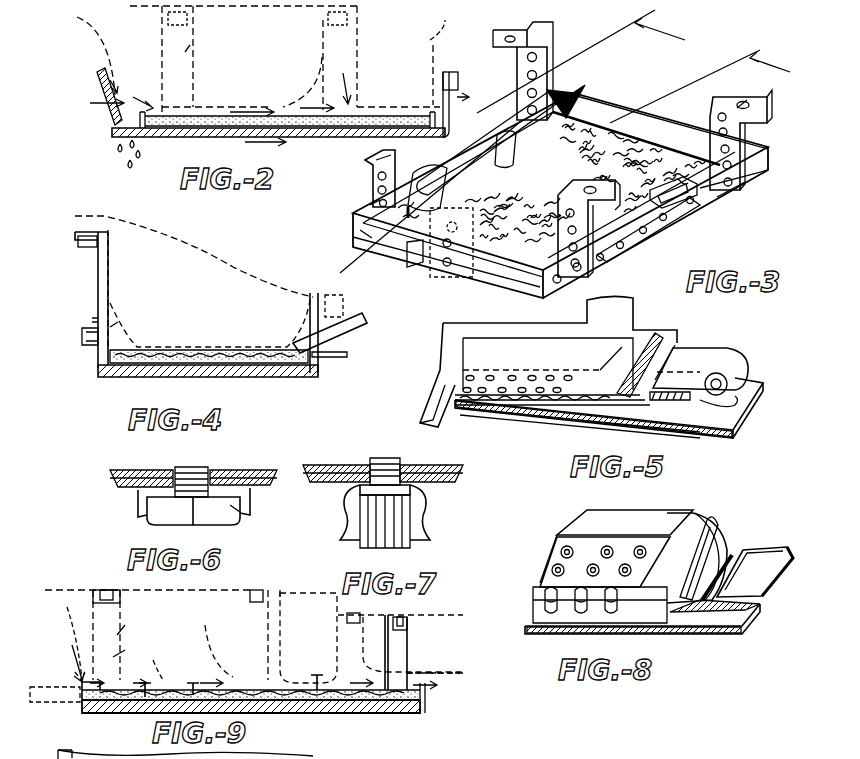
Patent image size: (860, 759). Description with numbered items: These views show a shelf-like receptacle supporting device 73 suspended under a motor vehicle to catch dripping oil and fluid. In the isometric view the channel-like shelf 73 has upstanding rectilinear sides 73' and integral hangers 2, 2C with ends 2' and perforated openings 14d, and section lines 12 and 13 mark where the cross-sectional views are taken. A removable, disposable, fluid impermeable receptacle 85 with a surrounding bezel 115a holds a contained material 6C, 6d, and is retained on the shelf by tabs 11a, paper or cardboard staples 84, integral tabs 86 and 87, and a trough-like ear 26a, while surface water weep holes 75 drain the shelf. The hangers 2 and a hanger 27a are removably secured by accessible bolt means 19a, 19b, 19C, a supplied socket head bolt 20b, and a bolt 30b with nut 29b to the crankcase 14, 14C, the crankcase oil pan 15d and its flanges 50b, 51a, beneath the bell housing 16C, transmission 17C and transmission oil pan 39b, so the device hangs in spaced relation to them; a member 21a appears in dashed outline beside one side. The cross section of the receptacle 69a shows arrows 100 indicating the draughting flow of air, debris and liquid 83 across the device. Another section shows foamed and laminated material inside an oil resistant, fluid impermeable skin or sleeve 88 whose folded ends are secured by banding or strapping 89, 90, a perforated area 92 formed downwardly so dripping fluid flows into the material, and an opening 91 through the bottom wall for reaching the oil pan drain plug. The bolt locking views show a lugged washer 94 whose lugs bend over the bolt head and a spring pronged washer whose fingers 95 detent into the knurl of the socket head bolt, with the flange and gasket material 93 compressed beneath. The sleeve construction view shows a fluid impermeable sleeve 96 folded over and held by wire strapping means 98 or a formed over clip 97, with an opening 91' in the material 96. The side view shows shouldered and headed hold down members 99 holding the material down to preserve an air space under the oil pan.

In FIG. 2, the hanger 2 is at (204, 47).
In FIG. 3, the hanger end 2' is at (750, 91).
In FIG. 3, the vehicle body wall 2C is at (548, 85).
In FIG. 4, the vehicle body wall 2C is at (97, 278).
In FIG. 6, the vehicle body wall 2C is at (76, 555).
In FIG. 7, the vehicle body wall 2C is at (490, 500).
In FIG. 9, the vehicle body wall 2C is at (430, 643).
In FIG. 8, the floor member 6C is at (543, 587).
In FIG. 9, the floor member 6C is at (420, 697).
In FIG. 3, the floor panel 6d is at (660, 146).
In FIG. 5, the floor panel 6d is at (447, 420).
In FIG. 3, the tubular strap roll 11a is at (427, 172).
In FIG. 3, the section line 12 is at (686, 84).
In FIG. 3, the section line 13 is at (689, 40).
In FIG. 9, the crankcase 14 is at (62, 600).
In FIG. 2, the cover housing 14C is at (208, 22).
In FIG. 3, the mounting bracket 14d is at (535, 48).
In FIG. 2, the bucket 15d is at (217, 97).
In FIG. 4, the bucket 15d is at (195, 307).
In FIG. 9, the bucket 15d is at (53, 647).
In FIG. 2, the second bucket 16C is at (382, 63).
In FIG. 9, the second bucket 16C is at (293, 640).
In FIG. 2, the hinge 17C is at (453, 28).
In FIG. 9, the support 19a is at (50, 715).
In FIG. 2, the clip 19b is at (475, 72).
In FIG. 4, the fastening clip 19C is at (82, 246).
In FIG. 6, the fastening clip 19C is at (230, 513).
In FIG. 9, the fastening clip 19C is at (120, 598).
In FIG. 7, the fastener body 20b is at (407, 548).
In FIG. 9, the fastener body 20b is at (262, 615).
In FIG. 4, the latch 21a is at (345, 302).
In FIG. 4, the scraper blade 26a is at (367, 315).
In FIG. 4, the wall flange 27a is at (95, 320).
In FIG. 6, the wall flange 27a is at (135, 527).
In FIG. 7, the wall flange 27a is at (443, 494).
In FIG. 9, the wall flange 27a is at (425, 660).
In FIG. 4, the deflector 29b is at (110, 327).
In FIG. 4, the bolt 30b is at (82, 336).
In FIG. 9, the outlet 39b is at (456, 677).
In FIG. 9, the ground surface 50b is at (68, 745).
In FIG. 6, the panel 51a is at (133, 483).
In FIG. 7, the panel 51a is at (330, 467).
In FIG. 2, the inner tray 69a is at (287, 135).
In FIG. 2, the shelf-like receptacle supporting device 73 is at (280, 117).
In FIG. 3, the shelf-like receptacle supporting device 73 is at (741, 185).
In FIG. 5, the shelf-like receptacle supporting device 73 is at (631, 399).
In FIG. 8, the shelf-like receptacle supporting device 73 is at (653, 628).
In FIG. 9, the shelf-like receptacle supporting device 73 is at (251, 721).
In FIG. 3, the upstanding side 73' is at (746, 203).
In FIG. 4, the upstanding side 73' is at (208, 348).
In FIG. 2, the weep holes 75 is at (110, 113).
In FIG. 2, the water drops 83 is at (110, 148).
In FIG. 3, the staples 84 is at (373, 210).
In FIG. 3, the receptacle 85 is at (370, 235).
In FIG. 4, the integral tab 86 is at (347, 347).
In FIG. 3, the integral tab 87 is at (405, 244).
In FIG. 5, the sleeve 88 is at (733, 368).
In FIG. 5, the banding or strapping 89 is at (683, 358).
In FIG. 5, the banding or strapping 90 is at (735, 386).
In FIG. 5, the opening 91 is at (559, 395).
In FIG. 9, the opening 91 is at (251, 710).
In FIG. 8, the opening 91' is at (605, 552).
In FIG. 5, the perforated area 92 is at (500, 363).
In FIG. 6, the gasket material 93 is at (115, 470).
In FIG. 6, the lugged washer 94 is at (137, 507).
In FIG. 7, the prongs or fingers 95 is at (430, 510).
In FIG. 8, the sleeve 96 is at (693, 513).
In FIG. 8, the formed over clip 97 is at (777, 553).
In FIG. 8, the wire strapping means 98 is at (732, 555).
In FIG. 9, the hold down members 99 is at (157, 670).
In FIG. 9, the flow arrows 100 is at (263, 677).
In FIG. 3, the strap hook 115a is at (680, 220).
In FIG. 8, the strap hook 115a is at (610, 523).